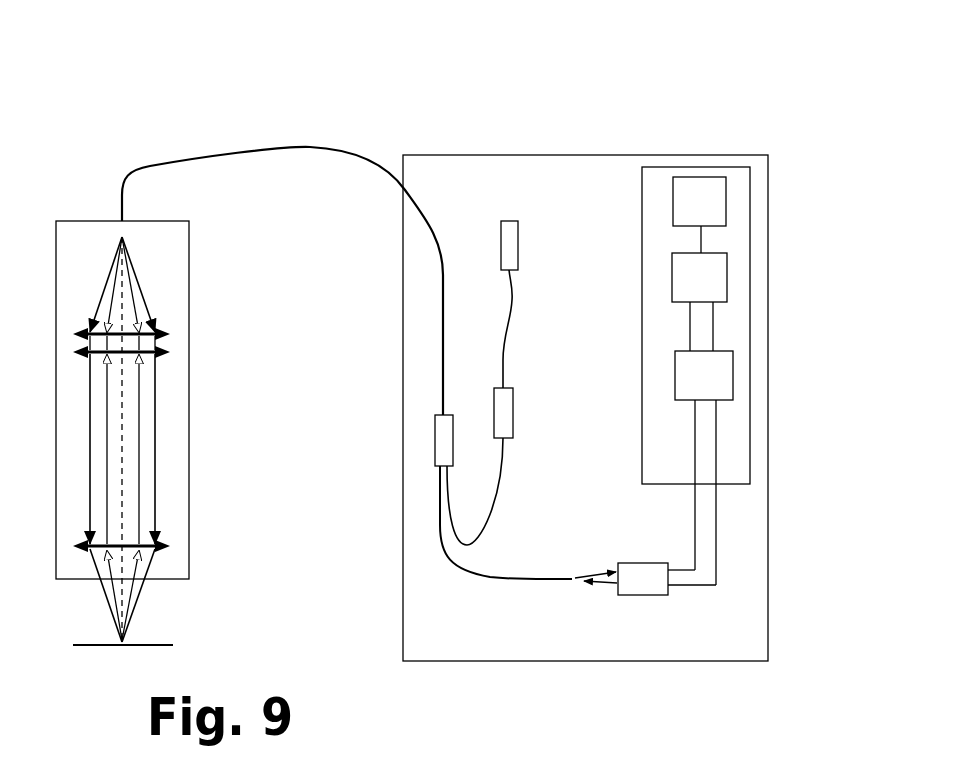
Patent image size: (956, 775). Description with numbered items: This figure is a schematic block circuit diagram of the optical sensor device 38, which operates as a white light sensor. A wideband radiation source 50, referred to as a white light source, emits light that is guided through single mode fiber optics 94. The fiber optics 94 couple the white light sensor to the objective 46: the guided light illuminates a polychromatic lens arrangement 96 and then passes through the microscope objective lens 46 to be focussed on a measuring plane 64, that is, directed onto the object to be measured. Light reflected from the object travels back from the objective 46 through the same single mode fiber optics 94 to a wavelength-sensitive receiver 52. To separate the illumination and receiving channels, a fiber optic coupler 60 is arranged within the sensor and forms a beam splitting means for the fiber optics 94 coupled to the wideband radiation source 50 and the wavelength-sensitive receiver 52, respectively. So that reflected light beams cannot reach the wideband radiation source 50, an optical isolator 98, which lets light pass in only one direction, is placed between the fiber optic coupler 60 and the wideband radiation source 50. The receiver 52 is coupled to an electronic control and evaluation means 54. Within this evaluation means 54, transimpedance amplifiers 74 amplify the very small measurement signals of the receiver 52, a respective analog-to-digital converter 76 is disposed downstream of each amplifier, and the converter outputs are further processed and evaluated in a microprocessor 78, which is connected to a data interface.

The sensor device 38 is at (175, 122).
The single mode fiber optics 94 is at (288, 157).
The polychromatic lens arrangement 96 is at (150, 343).
The objective 46 is at (150, 545).
The measuring plane 64 is at (155, 644).
The wideband radiation source 50 is at (507, 237).
The optical isolator 98 is at (500, 408).
The fiber optic coupler 60 is at (440, 450).
The electronic control and evaluation means 54 is at (664, 177).
The microprocessor 78 is at (712, 207).
The analog-to-digital converter 76 is at (713, 285).
The transimpedance amplifier 74 is at (728, 380).
The wavelength-sensitive receiver 52 is at (657, 585).